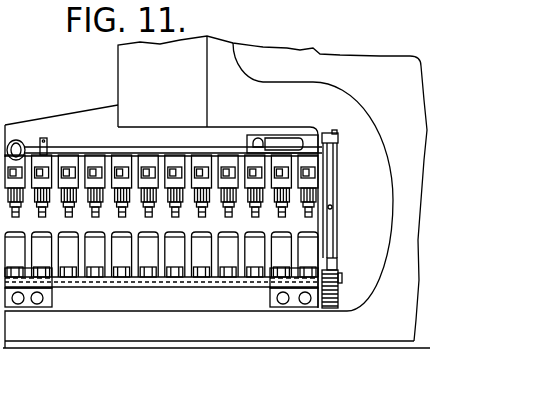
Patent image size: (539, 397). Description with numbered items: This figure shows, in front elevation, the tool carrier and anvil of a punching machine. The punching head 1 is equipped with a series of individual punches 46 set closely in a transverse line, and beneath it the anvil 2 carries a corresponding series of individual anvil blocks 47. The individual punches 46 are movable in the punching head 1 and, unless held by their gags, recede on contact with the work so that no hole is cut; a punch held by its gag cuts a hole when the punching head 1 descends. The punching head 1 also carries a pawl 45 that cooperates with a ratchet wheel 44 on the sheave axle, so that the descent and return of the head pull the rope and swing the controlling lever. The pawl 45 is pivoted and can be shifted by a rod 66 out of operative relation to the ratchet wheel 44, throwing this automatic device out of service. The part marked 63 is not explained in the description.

The punching head 1 is at (122, 68).
The anvil 2 is at (92, 297).
The ratchet wheel 44 is at (332, 268).
The pawl 45 is at (328, 233).
The individual punches 46 is at (132, 208).
The anvil blocks 47 is at (145, 260).
The bracket cap 63 is at (336, 133).
The rod 66 is at (67, 148).